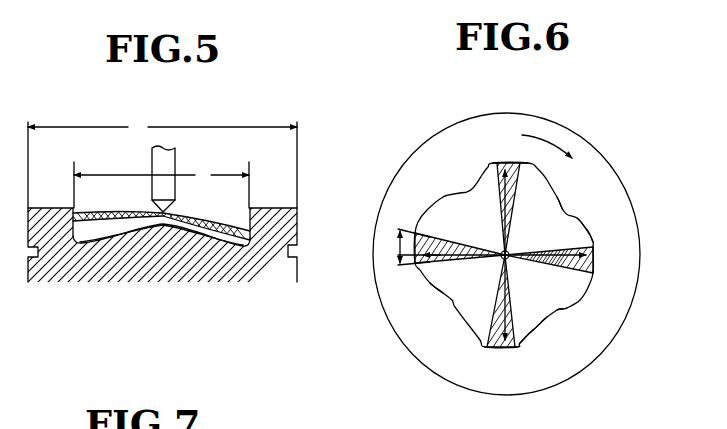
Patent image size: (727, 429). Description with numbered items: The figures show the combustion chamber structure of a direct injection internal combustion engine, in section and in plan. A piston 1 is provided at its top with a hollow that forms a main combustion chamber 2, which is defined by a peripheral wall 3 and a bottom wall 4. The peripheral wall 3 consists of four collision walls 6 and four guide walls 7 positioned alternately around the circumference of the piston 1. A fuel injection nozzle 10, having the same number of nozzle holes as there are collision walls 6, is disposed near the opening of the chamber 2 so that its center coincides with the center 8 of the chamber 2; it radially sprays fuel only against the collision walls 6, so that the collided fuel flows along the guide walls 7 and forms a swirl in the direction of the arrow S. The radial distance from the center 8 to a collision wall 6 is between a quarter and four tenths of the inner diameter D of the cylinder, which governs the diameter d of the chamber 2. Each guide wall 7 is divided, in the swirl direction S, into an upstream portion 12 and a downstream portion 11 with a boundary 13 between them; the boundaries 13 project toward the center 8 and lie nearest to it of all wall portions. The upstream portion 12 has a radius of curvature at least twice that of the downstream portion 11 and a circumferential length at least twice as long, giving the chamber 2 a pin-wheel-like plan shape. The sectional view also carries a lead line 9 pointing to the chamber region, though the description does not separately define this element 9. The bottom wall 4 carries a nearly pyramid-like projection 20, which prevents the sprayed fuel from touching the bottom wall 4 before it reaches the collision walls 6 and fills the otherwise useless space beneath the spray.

In FIG. 5, the piston 1 is at (285, 227).
In FIG. 6, the piston 1 is at (603, 322).
In FIG. 5, the main combustion chamber 2 is at (238, 206).
In FIG. 6, the main combustion chamber 2 is at (545, 292).
In FIG. 5, the peripheral wall 3 is at (82, 212).
In FIG. 5, the bottom wall 4 is at (94, 242).
In FIG. 5, the cross-hatched disc portion 9 is at (200, 210).
In FIG. 5, the fuel injection nozzle 10 is at (167, 163).
In FIG. 6, the fuel injection nozzle 10 is at (512, 249).
In FIG. 5, the projection 20 is at (163, 232).
In FIG. 6, the collision wall 6 is at (503, 162).
In FIG. 6, the guide wall 7 is at (450, 197).
In FIG. 6, the center 8 is at (460, 293).
In FIG. 6, the downstream portion 11 is at (595, 232).
In FIG. 6, the upstream portion 12 is at (565, 208).
In FIG. 6, the boundary 13 is at (590, 227).
In FIG. 5, the inner diameter of cylinder D is at (162, 162).
In FIG. 5, the diameter of the chamber d is at (161, 185).
In FIG. 6, the swirl direction S is at (557, 158).